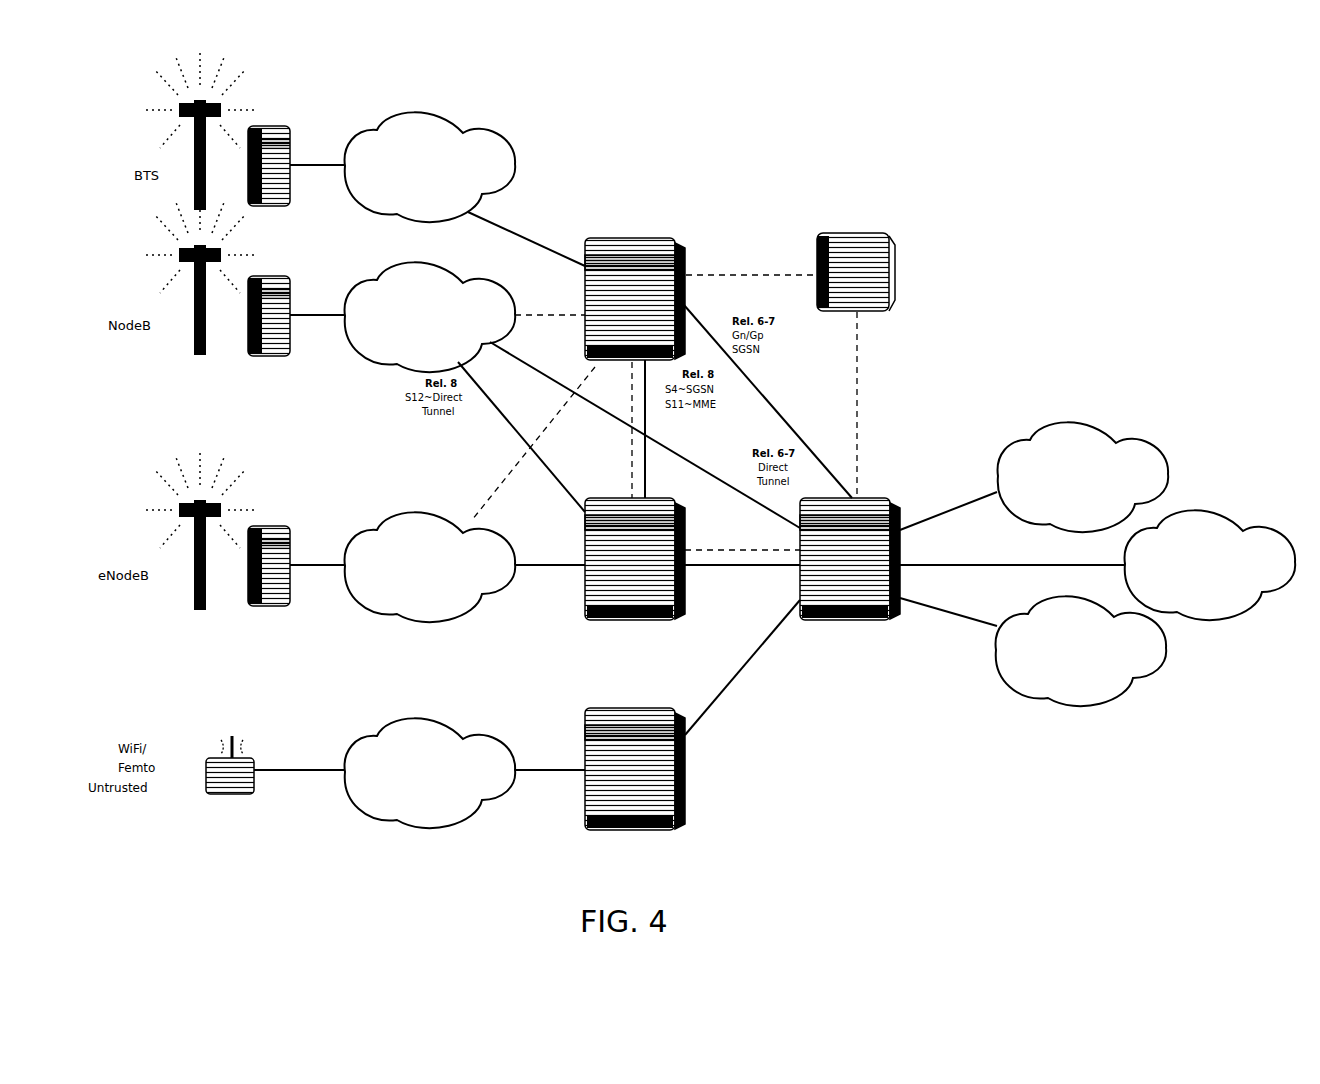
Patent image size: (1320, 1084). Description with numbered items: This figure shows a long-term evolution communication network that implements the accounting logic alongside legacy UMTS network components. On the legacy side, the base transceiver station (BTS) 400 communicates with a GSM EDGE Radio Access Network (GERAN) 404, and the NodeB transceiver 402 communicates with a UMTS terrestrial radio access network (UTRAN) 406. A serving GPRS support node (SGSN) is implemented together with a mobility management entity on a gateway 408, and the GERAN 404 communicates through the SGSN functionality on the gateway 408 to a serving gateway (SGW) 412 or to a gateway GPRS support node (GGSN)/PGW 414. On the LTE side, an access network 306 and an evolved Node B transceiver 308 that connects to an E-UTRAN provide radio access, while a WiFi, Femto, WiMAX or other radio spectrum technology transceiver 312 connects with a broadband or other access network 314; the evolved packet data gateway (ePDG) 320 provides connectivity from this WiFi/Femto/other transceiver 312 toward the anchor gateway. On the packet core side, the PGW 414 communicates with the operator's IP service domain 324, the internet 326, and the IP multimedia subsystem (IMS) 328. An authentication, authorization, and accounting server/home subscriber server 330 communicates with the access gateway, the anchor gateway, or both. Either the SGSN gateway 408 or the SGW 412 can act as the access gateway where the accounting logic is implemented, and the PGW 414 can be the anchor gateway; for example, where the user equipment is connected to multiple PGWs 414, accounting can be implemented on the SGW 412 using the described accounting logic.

The base transceiver station (BTS) 400 is at (290, 130).
The NodeB transceiver 402 is at (290, 280).
The GSM EDGE Radio Access Network (GERAN) 404 is at (475, 133).
The UMTS terrestrial radio access network (UTRAN) 406 is at (475, 283).
The gateway (SGSN/MME) 408 is at (680, 237).
The AAA server/home subscriber server (HSS) 330 is at (888, 235).
The access network 306 is at (292, 553).
The WiFi/Femto/other radio spectrum technology transceiver 312 is at (393, 522).
The serving gateway (SGW) 412 is at (690, 552).
The gateway GPRS support node (GGSN)/PGW 414 is at (882, 497).
The evolved packet data gateway (ePDG) 320 is at (680, 706).
The internet 326 is at (1130, 442).
The IP multimedia subsystem (IMS) 328 is at (1260, 532).
The operator's IP service domain 324 is at (1166, 650).
The evolved Node B (eNodeB) transceiver 308 is at (249, 758).
The WiFi/Femto/Other network 314 is at (475, 740).